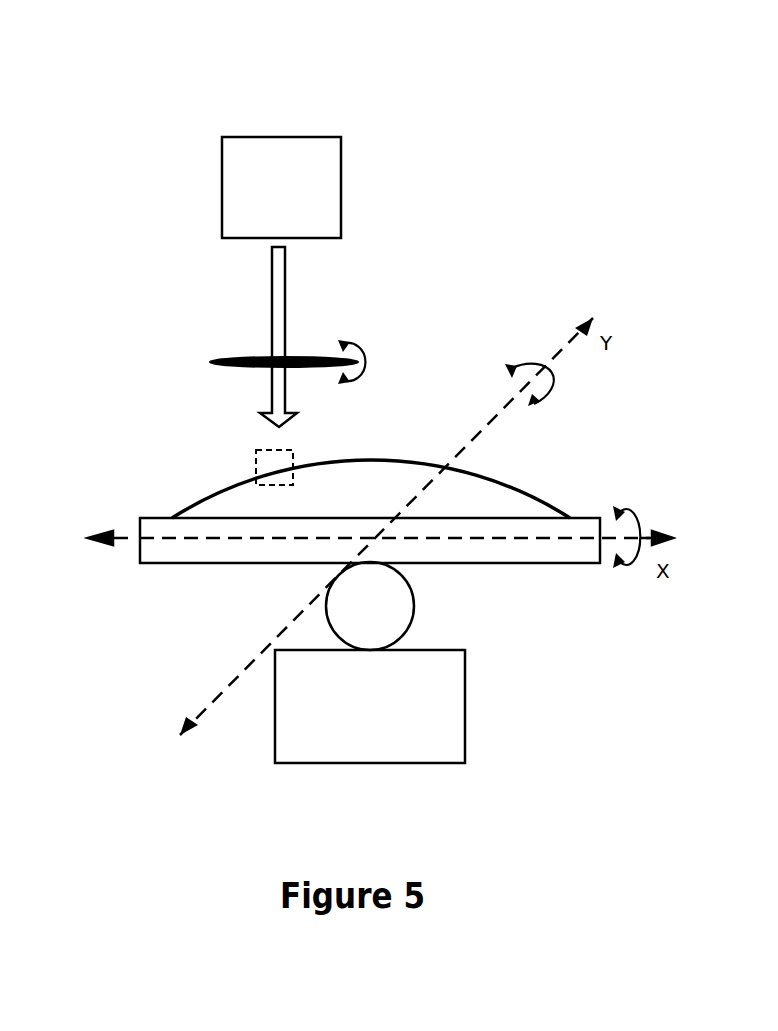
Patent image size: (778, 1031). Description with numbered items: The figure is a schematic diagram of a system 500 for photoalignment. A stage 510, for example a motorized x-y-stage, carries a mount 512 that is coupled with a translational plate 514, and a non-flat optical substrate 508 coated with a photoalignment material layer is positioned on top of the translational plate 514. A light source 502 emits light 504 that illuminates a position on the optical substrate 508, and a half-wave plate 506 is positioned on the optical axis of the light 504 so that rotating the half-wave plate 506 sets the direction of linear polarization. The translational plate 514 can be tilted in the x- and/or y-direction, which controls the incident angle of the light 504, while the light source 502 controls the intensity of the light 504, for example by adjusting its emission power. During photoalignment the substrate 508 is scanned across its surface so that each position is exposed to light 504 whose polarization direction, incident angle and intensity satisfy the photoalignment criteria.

The system for photoalignment 500 is at (190, 66).
The light source 502 is at (302, 199).
The light 504 is at (272, 277).
The half-wave plate 506 is at (210, 362).
The non-flat optical substrate 508 is at (391, 499).
The stage 510 is at (391, 719).
The mount 512 is at (391, 622).
The translational plate 514 is at (256, 455).